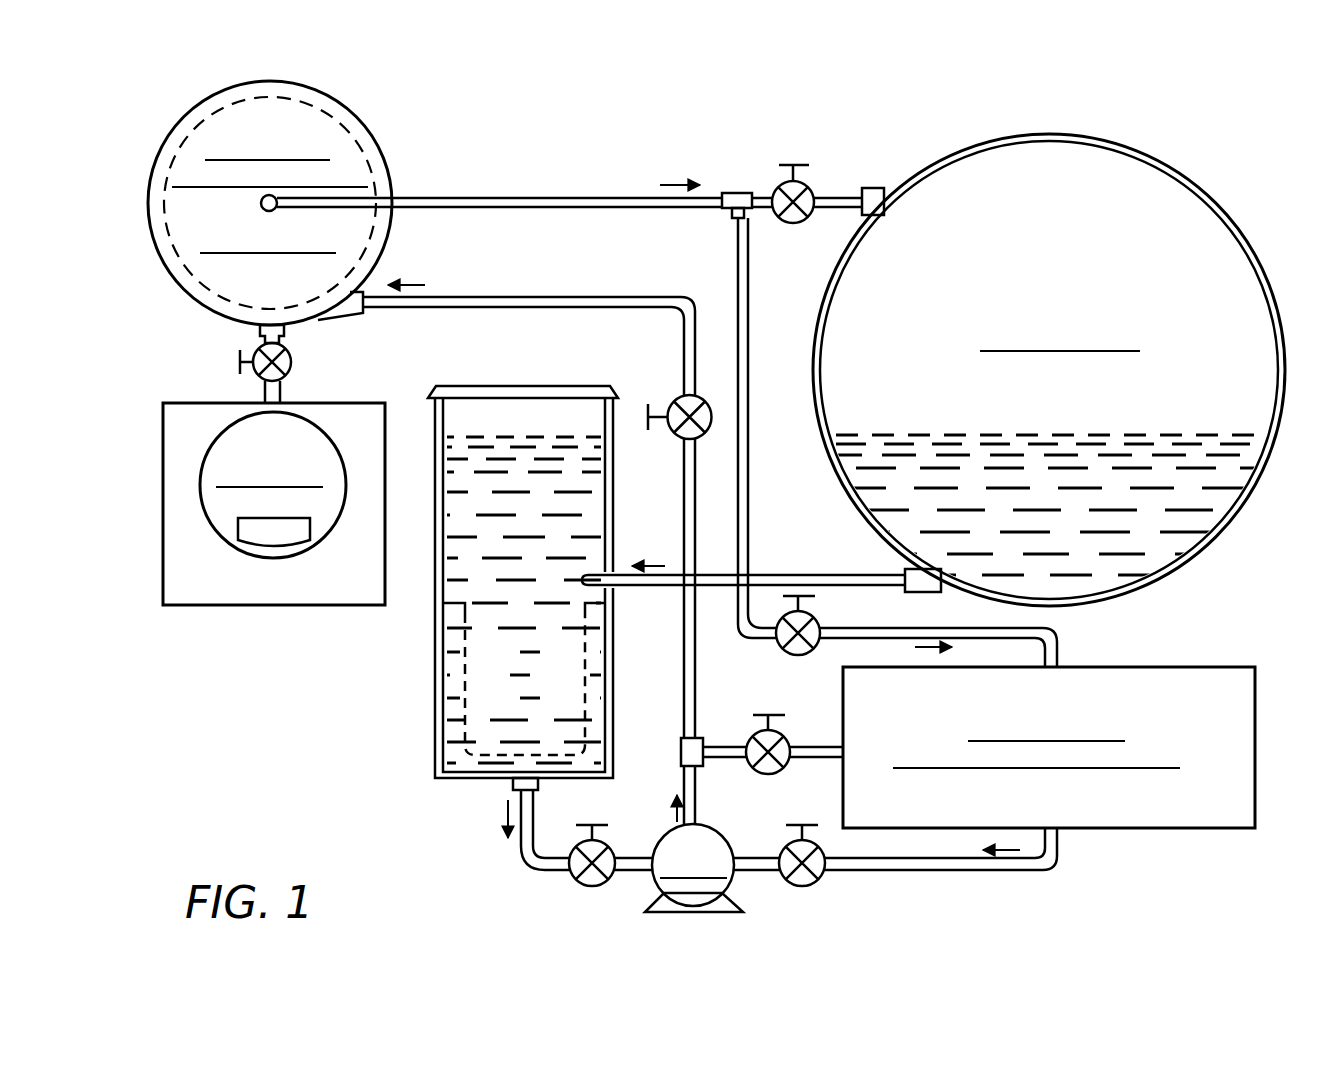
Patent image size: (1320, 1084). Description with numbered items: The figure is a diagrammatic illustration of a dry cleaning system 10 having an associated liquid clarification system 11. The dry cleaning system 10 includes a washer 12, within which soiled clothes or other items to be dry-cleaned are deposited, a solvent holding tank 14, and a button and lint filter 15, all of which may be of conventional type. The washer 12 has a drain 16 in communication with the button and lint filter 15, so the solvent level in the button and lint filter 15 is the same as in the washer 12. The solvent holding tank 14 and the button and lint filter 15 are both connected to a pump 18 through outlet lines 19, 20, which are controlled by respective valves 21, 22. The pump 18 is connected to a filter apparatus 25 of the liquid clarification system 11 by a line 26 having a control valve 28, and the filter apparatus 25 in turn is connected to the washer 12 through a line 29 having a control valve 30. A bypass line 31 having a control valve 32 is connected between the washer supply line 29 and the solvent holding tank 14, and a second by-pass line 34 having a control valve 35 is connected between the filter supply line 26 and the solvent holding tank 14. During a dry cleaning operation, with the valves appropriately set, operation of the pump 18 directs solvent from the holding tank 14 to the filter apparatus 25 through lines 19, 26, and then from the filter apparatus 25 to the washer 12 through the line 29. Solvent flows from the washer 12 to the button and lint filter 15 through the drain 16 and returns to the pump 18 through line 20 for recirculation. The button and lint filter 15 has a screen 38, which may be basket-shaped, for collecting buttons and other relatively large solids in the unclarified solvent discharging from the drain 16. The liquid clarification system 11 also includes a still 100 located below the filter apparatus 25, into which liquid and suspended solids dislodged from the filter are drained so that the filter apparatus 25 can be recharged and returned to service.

The dry cleaning system 10 is at (668, 150).
The liquid clarification system 11 is at (148, 279).
The washer 12 is at (1252, 248).
The solvent holding tank 14 is at (1205, 667).
The button and lint filter 15 is at (435, 672).
The drain 16 is at (767, 575).
The pump 18 is at (713, 830).
The outlet line 19 is at (768, 872).
The outlet line 20 is at (636, 872).
The valve 21 is at (815, 882).
The valve 22 is at (576, 880).
The filter apparatus 25 is at (172, 140).
The line 26 is at (527, 308).
The control valve 28 is at (673, 399).
The line 29 is at (635, 210).
The control valve 30 is at (780, 186).
The bypass line 31 is at (752, 281).
The control valve 32 is at (781, 648).
The second by-pass line 34 is at (815, 747).
The control valve 35 is at (752, 735).
The screen 38 is at (465, 725).
The still 100 is at (200, 494).